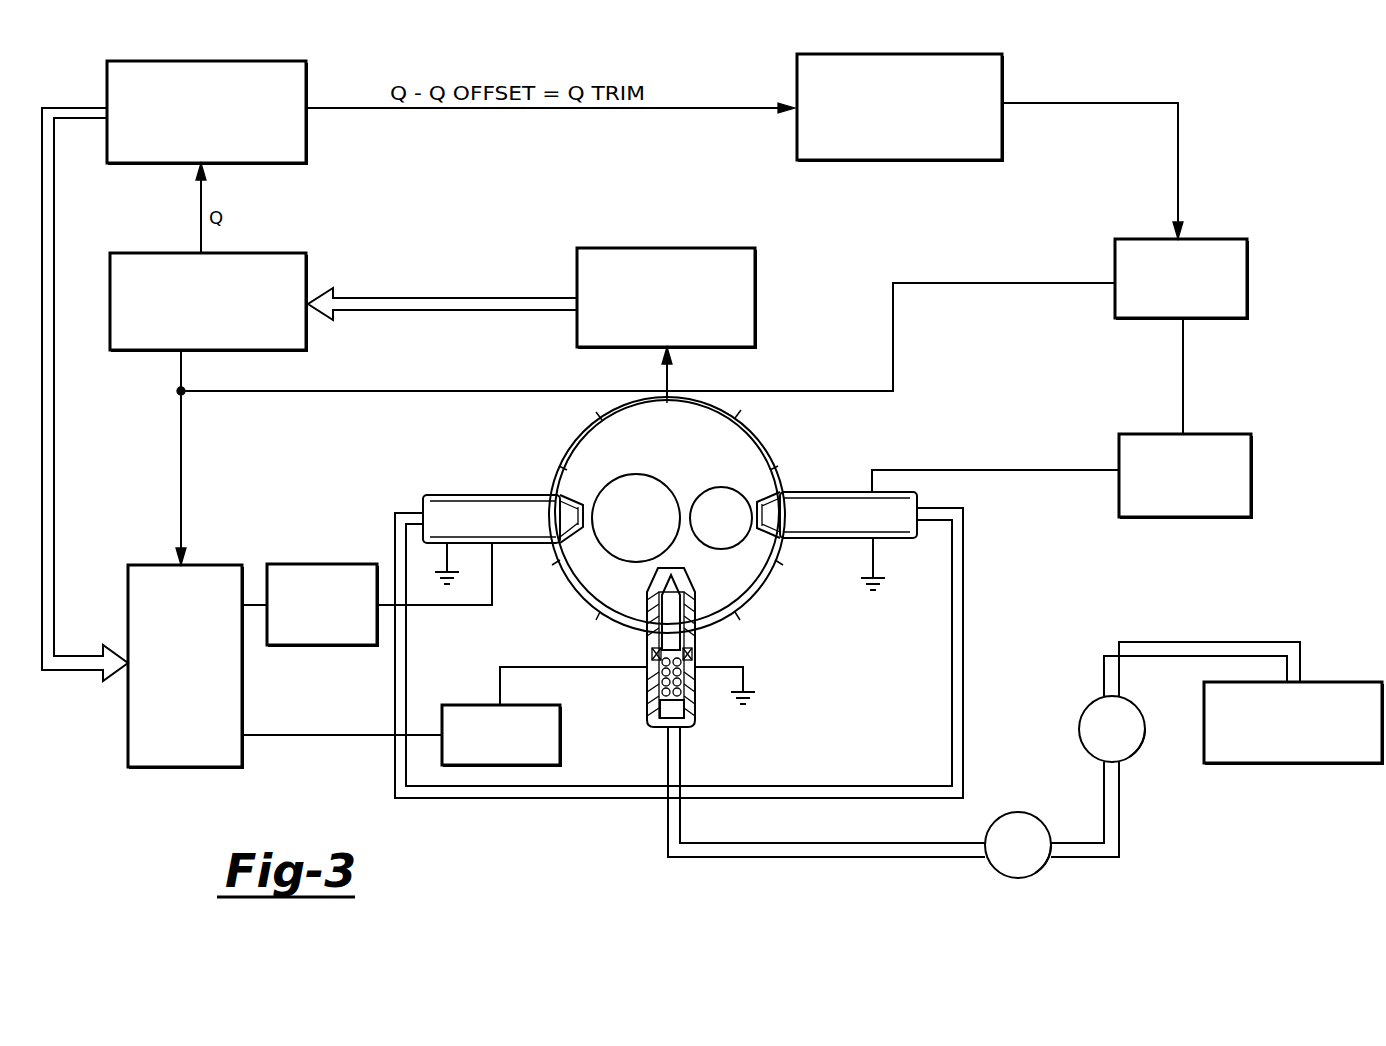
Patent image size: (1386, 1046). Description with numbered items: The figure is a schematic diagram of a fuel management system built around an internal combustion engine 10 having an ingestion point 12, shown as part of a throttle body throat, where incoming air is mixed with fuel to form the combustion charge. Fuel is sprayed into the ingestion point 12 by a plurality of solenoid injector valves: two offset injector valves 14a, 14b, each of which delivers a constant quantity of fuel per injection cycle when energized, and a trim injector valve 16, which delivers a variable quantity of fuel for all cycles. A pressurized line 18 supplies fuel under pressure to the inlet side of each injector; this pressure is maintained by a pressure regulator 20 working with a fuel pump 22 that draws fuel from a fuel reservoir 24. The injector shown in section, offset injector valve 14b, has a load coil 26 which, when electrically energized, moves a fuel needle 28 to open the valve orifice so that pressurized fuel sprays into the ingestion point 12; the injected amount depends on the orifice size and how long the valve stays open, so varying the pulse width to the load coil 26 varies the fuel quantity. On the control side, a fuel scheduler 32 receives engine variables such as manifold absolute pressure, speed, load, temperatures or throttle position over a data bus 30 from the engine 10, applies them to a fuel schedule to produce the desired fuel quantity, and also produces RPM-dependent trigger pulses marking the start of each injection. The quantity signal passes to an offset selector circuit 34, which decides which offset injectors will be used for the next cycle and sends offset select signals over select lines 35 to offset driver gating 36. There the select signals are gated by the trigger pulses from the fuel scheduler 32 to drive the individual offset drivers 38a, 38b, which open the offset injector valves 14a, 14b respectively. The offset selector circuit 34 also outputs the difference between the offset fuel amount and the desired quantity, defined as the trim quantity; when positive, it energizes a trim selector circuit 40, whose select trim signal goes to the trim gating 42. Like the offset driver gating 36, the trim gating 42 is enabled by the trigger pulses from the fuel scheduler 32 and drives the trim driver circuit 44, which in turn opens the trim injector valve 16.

The internal combustion engine 10 is at (757, 296).
The ingestion point 12 is at (777, 455).
The offset injector valve 14a is at (495, 495).
The offset injector valve 14b is at (716, 664).
The trim injector valve 16 is at (826, 543).
The pressurized line 18 is at (963, 583).
The pressure regulator 20 is at (1052, 778).
The fuel pump 22 is at (1082, 713).
The fuel reservoir 24 is at (1305, 765).
The load coil 26 is at (690, 657).
The fuel needle 28 is at (672, 617).
The data bus 30 is at (425, 312).
The fuel scheduler 32 is at (263, 253).
The offset selector circuit 34 is at (238, 61).
The select lines 35 is at (54, 455).
The offset driver gating 36 is at (178, 767).
The offset driver 38a is at (300, 645).
The offset driver 38b is at (560, 712).
The trim selector circuit 40 is at (880, 160).
The trim gating 42 is at (1140, 318).
The trim driver circuit 44 is at (1162, 517).